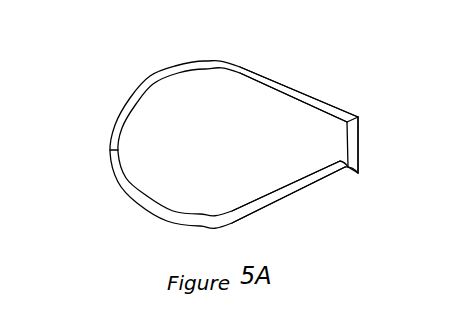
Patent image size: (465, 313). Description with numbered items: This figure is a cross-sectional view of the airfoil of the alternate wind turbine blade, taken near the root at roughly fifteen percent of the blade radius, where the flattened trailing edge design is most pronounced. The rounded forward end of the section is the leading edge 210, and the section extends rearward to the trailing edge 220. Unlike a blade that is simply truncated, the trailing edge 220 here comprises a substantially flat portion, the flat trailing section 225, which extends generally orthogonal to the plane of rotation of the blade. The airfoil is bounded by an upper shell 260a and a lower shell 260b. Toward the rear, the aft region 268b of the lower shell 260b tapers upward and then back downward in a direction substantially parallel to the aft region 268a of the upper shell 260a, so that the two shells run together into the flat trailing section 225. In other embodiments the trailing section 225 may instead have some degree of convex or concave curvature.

The leading edge 210 is at (98, 150).
The trailing edge 220 is at (374, 148).
The flat trailing section 225 is at (358, 140).
The upper shell 260a is at (274, 72).
The lower shell 260b is at (285, 204).
The aft region of upper shell 268a is at (323, 101).
The aft region of lower shell 268b is at (332, 167).